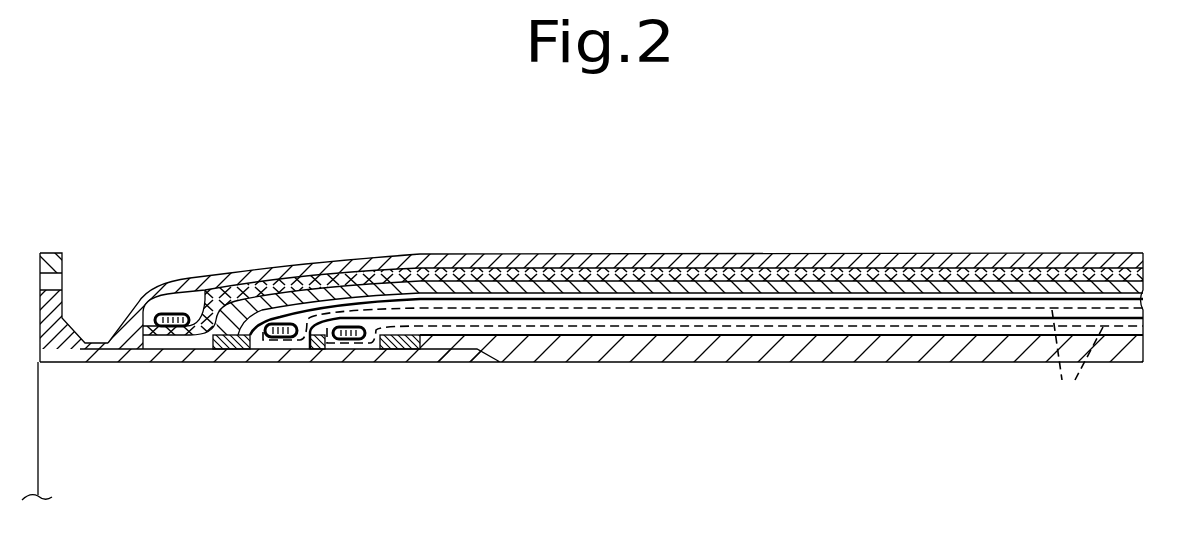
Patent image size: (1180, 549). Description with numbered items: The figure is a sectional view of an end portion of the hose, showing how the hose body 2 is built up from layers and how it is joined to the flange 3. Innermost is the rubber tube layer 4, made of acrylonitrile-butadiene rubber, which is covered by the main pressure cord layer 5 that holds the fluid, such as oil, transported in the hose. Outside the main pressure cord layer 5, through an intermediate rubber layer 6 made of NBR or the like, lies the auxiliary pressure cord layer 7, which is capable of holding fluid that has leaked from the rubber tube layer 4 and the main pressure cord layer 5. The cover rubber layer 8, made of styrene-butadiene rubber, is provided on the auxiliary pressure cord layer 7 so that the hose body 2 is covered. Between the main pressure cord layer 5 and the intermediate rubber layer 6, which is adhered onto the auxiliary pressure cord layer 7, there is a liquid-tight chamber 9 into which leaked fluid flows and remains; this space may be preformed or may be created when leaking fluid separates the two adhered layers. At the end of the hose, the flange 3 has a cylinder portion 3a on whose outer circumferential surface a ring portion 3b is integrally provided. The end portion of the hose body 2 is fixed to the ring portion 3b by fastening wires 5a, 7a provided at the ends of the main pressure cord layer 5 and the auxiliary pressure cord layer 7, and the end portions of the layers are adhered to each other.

The hose body 2 is at (960, 253).
The flange 3 is at (67, 365).
The cylinder portion 3a is at (330, 353).
The ring portion 3b is at (232, 350).
The rubber tube layer 4 is at (770, 350).
The main pressure cord layer 5 is at (1077, 366).
The fastening wire 5a is at (278, 340).
The intermediate rubber layer 6 is at (562, 292).
The auxiliary pressure cord layer 7 is at (877, 285).
The fastening wire 7a is at (166, 327).
The cover rubber layer 8 is at (809, 268).
The chamber 9 is at (667, 299).